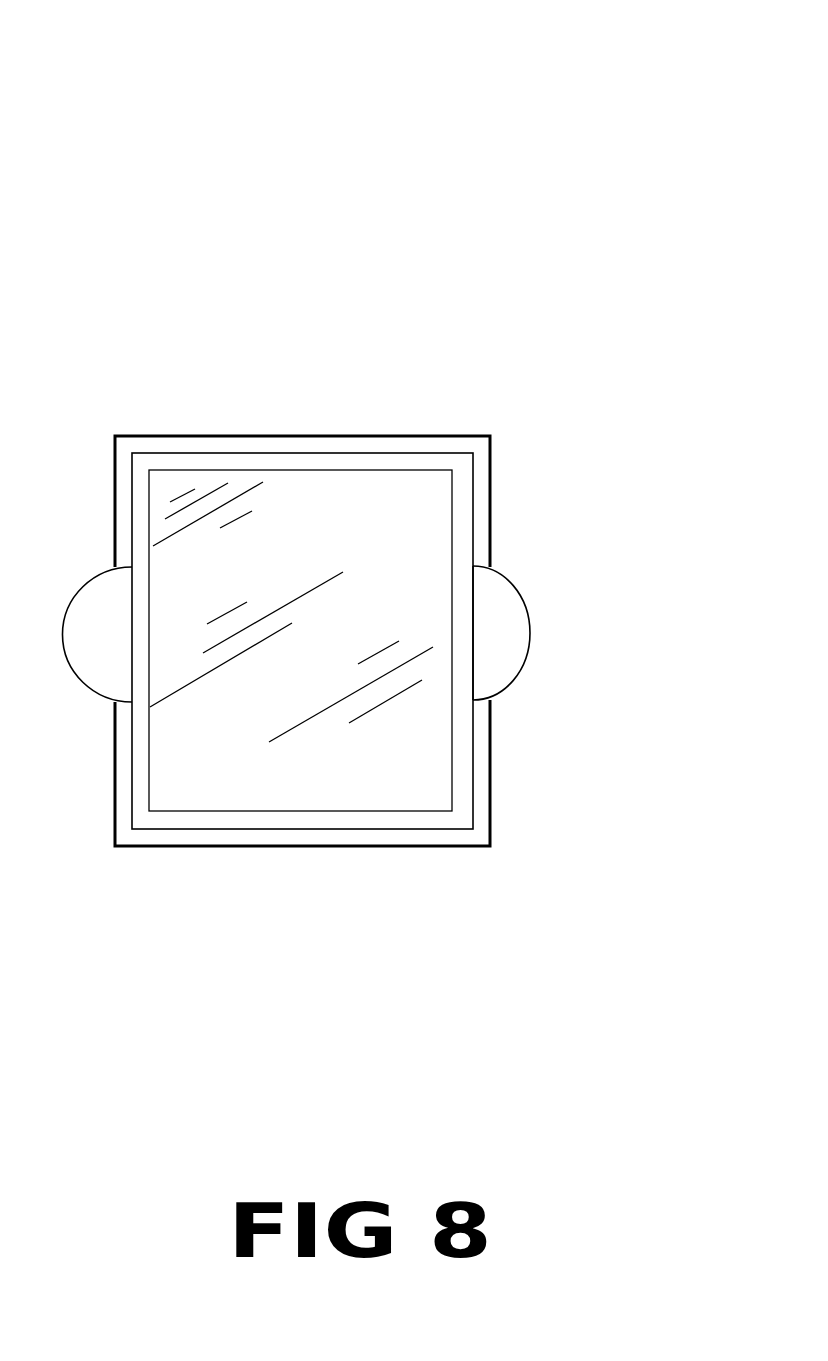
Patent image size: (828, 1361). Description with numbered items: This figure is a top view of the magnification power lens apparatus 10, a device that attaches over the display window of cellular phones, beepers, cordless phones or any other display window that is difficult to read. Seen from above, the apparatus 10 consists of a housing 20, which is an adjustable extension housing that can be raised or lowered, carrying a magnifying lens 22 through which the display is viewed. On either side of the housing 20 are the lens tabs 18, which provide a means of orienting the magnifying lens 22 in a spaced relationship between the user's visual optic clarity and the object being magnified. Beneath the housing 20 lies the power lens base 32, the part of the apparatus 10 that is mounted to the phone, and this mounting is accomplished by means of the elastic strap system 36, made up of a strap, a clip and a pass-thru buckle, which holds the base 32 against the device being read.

The magnification power lens apparatus 10 is at (383, 454).
The lens tabs 18 is at (518, 597).
The adjustable extension housing 20 is at (473, 633).
The magnifying lens 22 is at (320, 498).
The power lens base 32 is at (492, 822).
The elastic strap system 36 is at (492, 733).